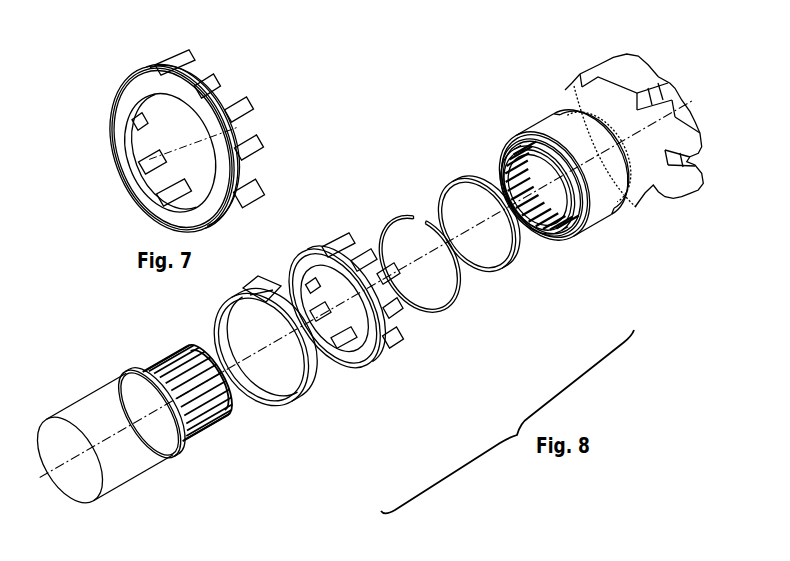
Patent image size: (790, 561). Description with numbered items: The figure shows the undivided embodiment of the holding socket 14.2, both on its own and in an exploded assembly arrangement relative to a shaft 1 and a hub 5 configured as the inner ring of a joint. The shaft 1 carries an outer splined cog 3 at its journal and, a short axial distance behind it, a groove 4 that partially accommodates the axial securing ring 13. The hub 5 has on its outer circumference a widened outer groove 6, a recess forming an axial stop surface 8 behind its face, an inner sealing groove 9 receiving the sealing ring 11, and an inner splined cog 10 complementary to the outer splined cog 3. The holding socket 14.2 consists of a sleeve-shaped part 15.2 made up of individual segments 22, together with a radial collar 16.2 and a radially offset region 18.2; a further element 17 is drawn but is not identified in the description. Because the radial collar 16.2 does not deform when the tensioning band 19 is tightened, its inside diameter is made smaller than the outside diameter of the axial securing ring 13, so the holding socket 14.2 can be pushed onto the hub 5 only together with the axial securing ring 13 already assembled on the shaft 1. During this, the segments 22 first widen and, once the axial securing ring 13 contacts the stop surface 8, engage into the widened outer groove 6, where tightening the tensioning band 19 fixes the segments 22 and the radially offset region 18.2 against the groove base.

In FIG. 8, the shaft 1 is at (83, 408).
In FIG. 8, the outer splined cog 3 is at (160, 353).
In FIG. 8, the groove 4 is at (122, 380).
In FIG. 8, the hub 5 is at (613, 170).
In FIG. 8, the widened outer groove 6 is at (603, 215).
In FIG. 8, the stop surface 8 is at (525, 205).
In FIG. 8, the inner sealing groove 9 is at (553, 182).
In FIG. 8, the inner splined cog 10 is at (590, 197).
In FIG. 8, the sealing ring 11 is at (497, 270).
In FIG. 8, the axial securing ring 13 is at (437, 300).
In FIG. 7, the holding socket 14.2 is at (110, 54).
In FIG. 8, the holding socket 14.2 is at (396, 374).
In FIG. 7, the sleeve-shaped part 15.2 is at (233, 81).
In FIG. 7, the radial collar 16.2 is at (125, 98).
In FIG. 7, the lug 17 is at (206, 72).
In FIG. 7, the radially offset region 18.2 is at (163, 58).
In FIG. 8, the tensioning band 19 is at (303, 385).
In FIG. 7, the segments 22 is at (250, 157).